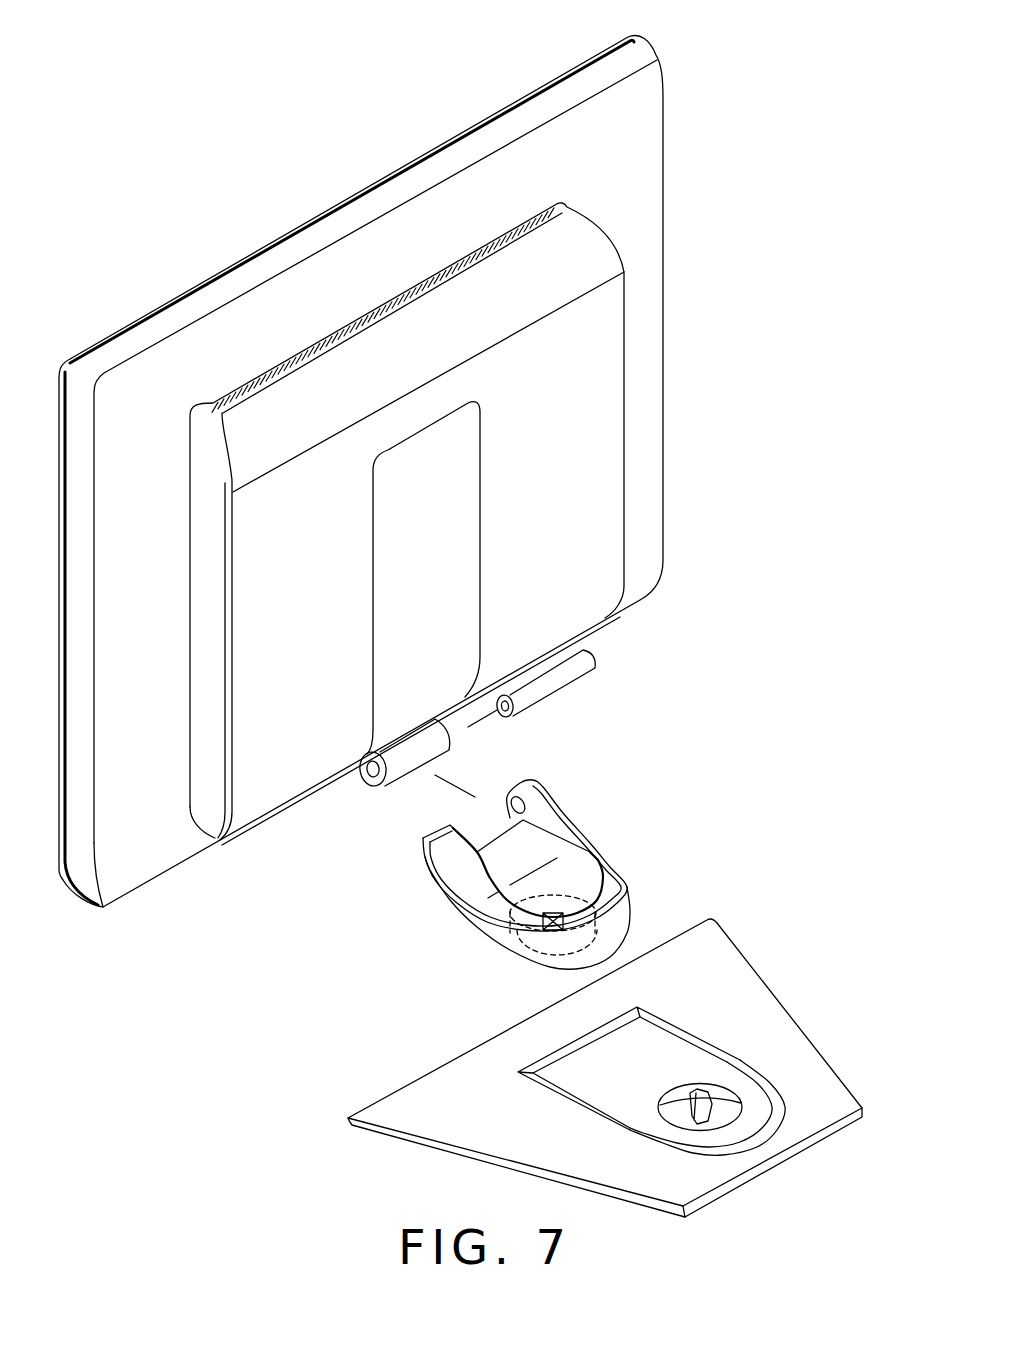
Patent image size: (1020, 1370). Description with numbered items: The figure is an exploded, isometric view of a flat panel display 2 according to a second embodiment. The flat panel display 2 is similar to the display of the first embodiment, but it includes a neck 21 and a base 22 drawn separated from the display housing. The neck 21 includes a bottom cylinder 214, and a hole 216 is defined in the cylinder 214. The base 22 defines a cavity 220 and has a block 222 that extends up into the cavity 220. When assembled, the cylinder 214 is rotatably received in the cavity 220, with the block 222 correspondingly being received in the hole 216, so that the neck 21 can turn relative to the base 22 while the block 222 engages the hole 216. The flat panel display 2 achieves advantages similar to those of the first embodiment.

The flat panel display 2 is at (240, 169).
The neck 21 is at (583, 878).
The bottom cylinder 214 is at (527, 935).
The hole 216 is at (553, 917).
The base 22 is at (730, 980).
The cavity 220 is at (680, 1092).
The block 222 is at (712, 1100).